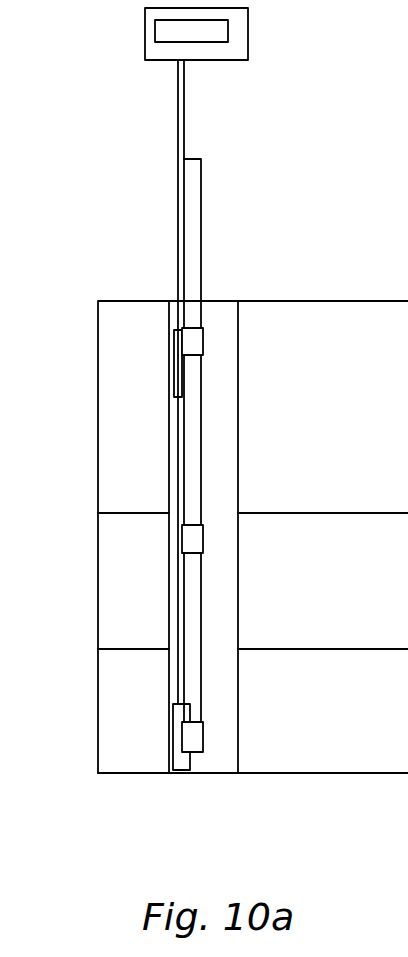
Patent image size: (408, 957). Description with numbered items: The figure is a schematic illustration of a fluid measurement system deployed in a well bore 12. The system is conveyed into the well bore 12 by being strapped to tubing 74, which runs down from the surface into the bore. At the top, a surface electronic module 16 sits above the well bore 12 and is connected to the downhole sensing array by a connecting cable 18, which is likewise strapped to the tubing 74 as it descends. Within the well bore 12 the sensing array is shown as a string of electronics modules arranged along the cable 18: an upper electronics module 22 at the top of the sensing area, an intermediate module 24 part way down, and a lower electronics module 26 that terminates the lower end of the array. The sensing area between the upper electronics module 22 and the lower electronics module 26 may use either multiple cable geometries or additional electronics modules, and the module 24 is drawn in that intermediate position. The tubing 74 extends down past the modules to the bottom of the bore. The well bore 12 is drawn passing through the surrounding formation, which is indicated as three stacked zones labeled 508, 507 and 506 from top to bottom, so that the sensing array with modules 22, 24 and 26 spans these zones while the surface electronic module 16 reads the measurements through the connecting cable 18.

The well bore 12 is at (220, 300).
The surface electronic module 16 is at (221, 31).
The connecting cable 18 is at (178, 210).
The upper electronics module 22 is at (178, 382).
The second sensor 24 is at (192, 537).
The lower electronics module 26 is at (180, 727).
The tubing 74 is at (195, 737).
The lower formation layer 506 is at (393, 732).
The middle formation layer 507 is at (393, 595).
The upper formation layer 508 is at (393, 428).